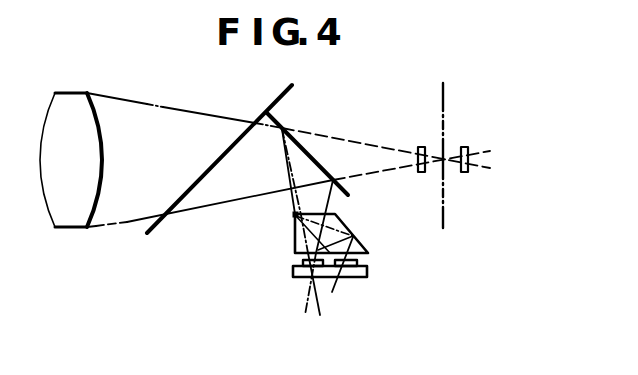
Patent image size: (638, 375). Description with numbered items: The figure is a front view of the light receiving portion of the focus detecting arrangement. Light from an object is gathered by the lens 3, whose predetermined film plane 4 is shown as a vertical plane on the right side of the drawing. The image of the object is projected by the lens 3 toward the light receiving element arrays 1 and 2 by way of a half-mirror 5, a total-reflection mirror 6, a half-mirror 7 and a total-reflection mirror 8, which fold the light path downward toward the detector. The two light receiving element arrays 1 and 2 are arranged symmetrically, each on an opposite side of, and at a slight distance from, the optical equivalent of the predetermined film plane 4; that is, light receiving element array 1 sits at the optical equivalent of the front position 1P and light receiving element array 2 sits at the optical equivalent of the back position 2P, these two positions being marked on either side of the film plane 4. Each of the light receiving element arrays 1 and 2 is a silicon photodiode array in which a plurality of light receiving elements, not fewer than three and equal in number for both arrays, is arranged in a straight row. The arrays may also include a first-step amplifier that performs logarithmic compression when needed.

The light receiving element array 1 is at (297, 258).
The light receiving element array 2 is at (360, 257).
The lens 3 is at (103, 148).
The predetermined film plane 4 is at (445, 115).
The half-mirror 5 is at (283, 92).
The total-reflection mirror 6 is at (281, 121).
The half-mirror 7 is at (293, 218).
The total-reflection mirror 8 is at (344, 223).
The front position 1P is at (422, 173).
The back position 2P is at (465, 173).